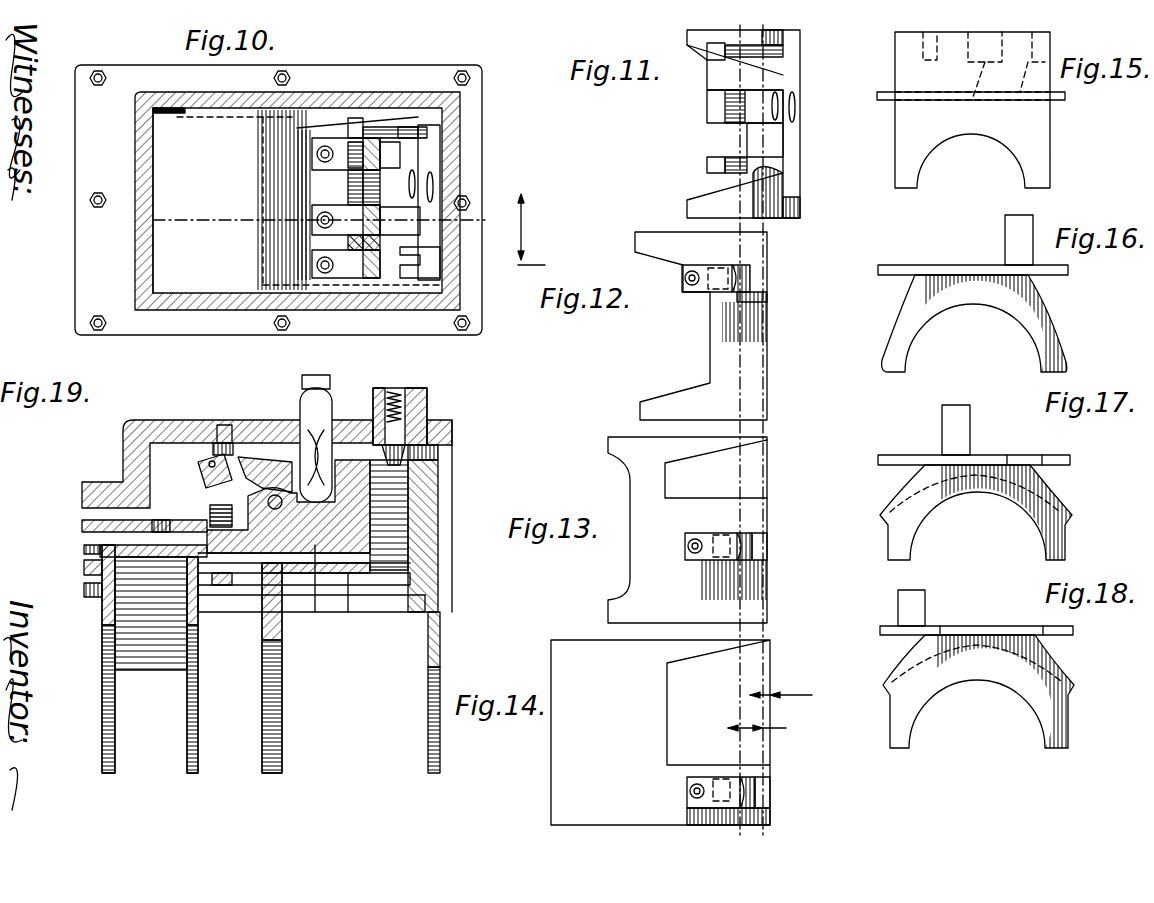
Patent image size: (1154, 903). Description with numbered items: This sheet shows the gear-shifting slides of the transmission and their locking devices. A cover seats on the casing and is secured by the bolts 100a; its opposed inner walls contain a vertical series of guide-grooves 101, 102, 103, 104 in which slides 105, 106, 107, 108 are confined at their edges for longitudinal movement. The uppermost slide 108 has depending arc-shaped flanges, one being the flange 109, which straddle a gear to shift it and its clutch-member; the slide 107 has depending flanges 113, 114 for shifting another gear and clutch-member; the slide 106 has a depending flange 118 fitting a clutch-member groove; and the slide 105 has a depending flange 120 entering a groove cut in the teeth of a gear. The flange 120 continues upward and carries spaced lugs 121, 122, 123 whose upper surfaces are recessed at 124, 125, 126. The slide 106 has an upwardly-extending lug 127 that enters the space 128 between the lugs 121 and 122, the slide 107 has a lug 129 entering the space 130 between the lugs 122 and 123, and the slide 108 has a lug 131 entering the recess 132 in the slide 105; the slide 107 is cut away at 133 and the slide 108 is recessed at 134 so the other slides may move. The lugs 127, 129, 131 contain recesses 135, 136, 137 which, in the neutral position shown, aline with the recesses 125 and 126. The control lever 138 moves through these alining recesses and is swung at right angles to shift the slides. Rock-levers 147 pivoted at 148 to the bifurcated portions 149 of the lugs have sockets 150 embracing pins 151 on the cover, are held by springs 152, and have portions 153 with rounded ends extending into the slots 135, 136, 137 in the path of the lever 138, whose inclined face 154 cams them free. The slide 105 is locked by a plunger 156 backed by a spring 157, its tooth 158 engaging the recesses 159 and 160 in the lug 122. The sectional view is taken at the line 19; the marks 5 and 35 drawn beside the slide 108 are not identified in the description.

In FIG. 10, the bolts 100a is at (98, 192).
In FIG. 19, the guide-groove 101 is at (442, 594).
In FIG. 19, the guide-groove 102 is at (442, 567).
In FIG. 19, the guide-groove 103 is at (440, 548).
In FIG. 10, the guide-groove 104 is at (160, 112).
In FIG. 19, the guide-groove 104 is at (440, 528).
In FIG. 19, the slide 105 is at (385, 592).
In FIG. 11, the slide 105 is at (802, 207).
In FIG. 15, the slide 105 is at (1053, 98).
In FIG. 19, the slide 106 is at (346, 602).
In FIG. 12, the slide 106 is at (760, 366).
In FIG. 16, the slide 106 is at (935, 268).
In FIG. 19, the slide 107 is at (315, 590).
In FIG. 13, the slide 107 is at (628, 445).
In FIG. 17, the slide 107 is at (990, 460).
In FIG. 10, the slide 108 is at (192, 262).
In FIG. 19, the slide 108 is at (104, 483).
In FIG. 14, the slide 108 is at (660, 732).
In FIG. 18, the slide 108 is at (996, 630).
In FIG. 18, the depending flange 109 is at (1060, 725).
In FIG. 19, the depending flange 113 is at (104, 615).
In FIG. 17, the depending flange 113 is at (1055, 545).
In FIG. 19, the depending flange 114 is at (198, 618).
In FIG. 19, the depending flange 118 is at (284, 696).
In FIG. 16, the depending flange 118 is at (1046, 338).
In FIG. 10, the depending flange 120 is at (428, 213).
In FIG. 19, the depending flange 120 is at (432, 475).
In FIG. 11, the depending flange 120 is at (802, 80).
In FIG. 15, the depending flange 120 is at (1030, 153).
In FIG. 10, the lug 121 is at (352, 128).
In FIG. 11, the lug 121 is at (712, 60).
In FIG. 15, the lug 121 is at (1006, 66).
In FIG. 10, the lug 122 is at (350, 190).
In FIG. 11, the lug 122 is at (710, 113).
In FIG. 15, the lug 122 is at (972, 108).
In FIG. 10, the lug 123 is at (350, 212).
In FIG. 11, the lug 123 is at (708, 165).
In FIG. 15, the lug 123 is at (924, 61).
In FIG. 10, the recess 124 is at (412, 125).
In FIG. 11, the recess 124 is at (770, 42).
In FIG. 10, the recess 125 is at (312, 172).
In FIG. 11, the recess 125 is at (735, 96).
In FIG. 10, the recess 126 is at (378, 278).
In FIG. 11, the recess 126 is at (738, 160).
In FIG. 10, the lug 127 is at (508, 140).
In FIG. 12, the lug 127 is at (762, 278).
In FIG. 16, the lug 127 is at (1010, 243).
In FIG. 10, the space 128 is at (420, 142).
In FIG. 11, the space 128 is at (765, 56).
In FIG. 10, the lug 129 is at (395, 223).
In FIG. 19, the lug 129 is at (382, 502).
In FIG. 13, the lug 129 is at (762, 548).
In FIG. 17, the lug 129 is at (958, 432).
In FIG. 11, the space 130 is at (760, 126).
In FIG. 10, the lug 131 is at (392, 278).
In FIG. 14, the lug 131 is at (765, 792).
In FIG. 18, the lug 131 is at (915, 607).
In FIG. 10, the recess 132 is at (409, 250).
In FIG. 11, the recess 132 is at (765, 190).
In FIG. 13, the cut-away 133 is at (725, 480).
In FIG. 14, the recess 134 is at (734, 664).
In FIG. 12, the recess 135 is at (766, 298).
In FIG. 19, the recess 136 is at (380, 444).
In FIG. 13, the recess 136 is at (748, 565).
In FIG. 14, the recess 137 is at (745, 808).
In FIG. 19, the control lever 138 is at (314, 385).
In FIG. 10, the rock-levers 147 is at (314, 152).
In FIG. 19, the rock-levers 147 is at (206, 486).
In FIG. 12, the rock-levers 147 is at (700, 296).
In FIG. 13, the rock-levers 147 is at (700, 562).
In FIG. 14, the rock-levers 147 is at (688, 785).
In FIG. 19, the pivot 148 is at (272, 494).
In FIG. 13, the bifurcated portions 149 is at (722, 534).
In FIG. 14, the bifurcated portions 149 is at (722, 778).
In FIG. 19, the sockets 150 is at (210, 462).
In FIG. 12, the sockets 150 is at (692, 270).
In FIG. 13, the sockets 150 is at (688, 546).
In FIG. 14, the sockets 150 is at (690, 792).
In FIG. 19, the pin 151 is at (223, 425).
In FIG. 19, the springs 152 is at (210, 507).
In FIG. 19, the portions 153 is at (296, 445).
In FIG. 12, the portions 153 is at (746, 272).
In FIG. 13, the portions 153 is at (740, 533).
In FIG. 14, the portions 153 is at (750, 780).
In FIG. 10, the inclined face 154 is at (335, 235).
In FIG. 19, the inclined face 154 is at (306, 470).
In FIG. 19, the plunger 156 is at (378, 452).
In FIG. 19, the spring 157 is at (395, 388).
In FIG. 19, the tooth 158 is at (428, 462).
In FIG. 10, the recess 159 is at (415, 185).
In FIG. 19, the recess 159 is at (428, 410).
In FIG. 11, the recess 159 is at (779, 106).
In FIG. 10, the recess 160 is at (433, 188).
In FIG. 19, the recess 160 is at (445, 428).
In FIG. 11, the recess 160 is at (796, 115).
In FIG. 10, the section line 19 is at (534, 229).
In FIG. 14, the dimension 5 is at (781, 705).
In FIG. 14, the dimension 35 is at (757, 739).